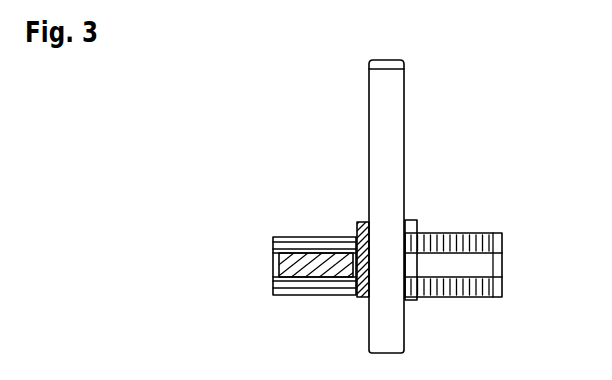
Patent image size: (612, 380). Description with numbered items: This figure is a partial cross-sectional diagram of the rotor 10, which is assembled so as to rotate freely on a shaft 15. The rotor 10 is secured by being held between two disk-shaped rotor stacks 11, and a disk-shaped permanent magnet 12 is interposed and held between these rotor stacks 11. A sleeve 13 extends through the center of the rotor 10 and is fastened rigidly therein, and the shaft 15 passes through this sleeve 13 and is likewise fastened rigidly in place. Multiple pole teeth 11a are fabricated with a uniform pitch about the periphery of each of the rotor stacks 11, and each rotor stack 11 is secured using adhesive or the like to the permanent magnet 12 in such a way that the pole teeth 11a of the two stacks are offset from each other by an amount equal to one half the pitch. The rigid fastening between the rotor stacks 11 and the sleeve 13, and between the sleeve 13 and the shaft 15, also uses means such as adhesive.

The rotor 10 is at (481, 213).
The rotor stacks 11 is at (302, 237).
The pole teeth 11a is at (453, 233).
The permanent magnet 12 is at (279, 274).
The sleeve 13 is at (356, 222).
The shaft 15 is at (404, 137).